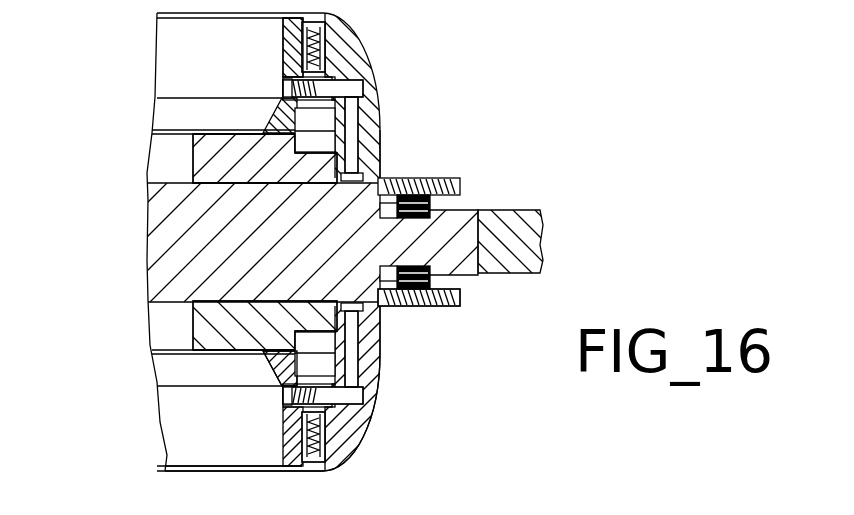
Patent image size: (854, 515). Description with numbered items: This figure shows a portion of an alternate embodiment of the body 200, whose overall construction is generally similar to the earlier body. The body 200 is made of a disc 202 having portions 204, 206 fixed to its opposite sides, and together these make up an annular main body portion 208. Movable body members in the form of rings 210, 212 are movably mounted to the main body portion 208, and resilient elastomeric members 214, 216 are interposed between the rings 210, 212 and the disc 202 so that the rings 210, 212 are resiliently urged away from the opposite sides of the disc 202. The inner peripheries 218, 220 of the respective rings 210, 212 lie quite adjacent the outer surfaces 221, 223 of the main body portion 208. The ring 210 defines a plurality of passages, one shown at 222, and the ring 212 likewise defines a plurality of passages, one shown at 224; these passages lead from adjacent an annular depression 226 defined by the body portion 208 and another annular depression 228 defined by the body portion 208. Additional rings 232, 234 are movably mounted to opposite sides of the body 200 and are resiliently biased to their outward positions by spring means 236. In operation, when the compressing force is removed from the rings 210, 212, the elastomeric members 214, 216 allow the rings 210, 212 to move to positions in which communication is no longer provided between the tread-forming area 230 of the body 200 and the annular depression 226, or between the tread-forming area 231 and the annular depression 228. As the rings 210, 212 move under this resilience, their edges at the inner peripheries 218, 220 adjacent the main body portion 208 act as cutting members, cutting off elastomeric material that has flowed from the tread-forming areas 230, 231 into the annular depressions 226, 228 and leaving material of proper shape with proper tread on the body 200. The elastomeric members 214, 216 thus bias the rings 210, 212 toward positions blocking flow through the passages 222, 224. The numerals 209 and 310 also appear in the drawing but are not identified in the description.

The body 200 is at (420, 103).
The disc 202 is at (170, 239).
The portion 204 is at (398, 52).
The portion 206 is at (386, 393).
The main body portion 208 is at (356, 453).
The lower threaded bolt 209 is at (472, 306).
The movable body member 210 is at (458, 173).
The movable body member 212 is at (451, 308).
The resilient elastomeric member 214 is at (428, 178).
The resilient elastomeric member 216 is at (380, 312).
The inner periphery 218 is at (383, 170).
The inner periphery 220 is at (368, 312).
The outer surface 221 is at (378, 115).
The passage 222 is at (463, 192).
The outer surface 223 is at (365, 434).
The passage 224 is at (463, 298).
The annular depression 226 is at (378, 186).
The annular depression 228 is at (380, 290).
The tread-forming area 230 is at (385, 165).
The tread-forming area 231 is at (380, 417).
The additional ring 232 is at (283, 32).
The additional ring 234 is at (320, 472).
The spring means 236 is at (327, 55).
The base plate 310 is at (210, 490).